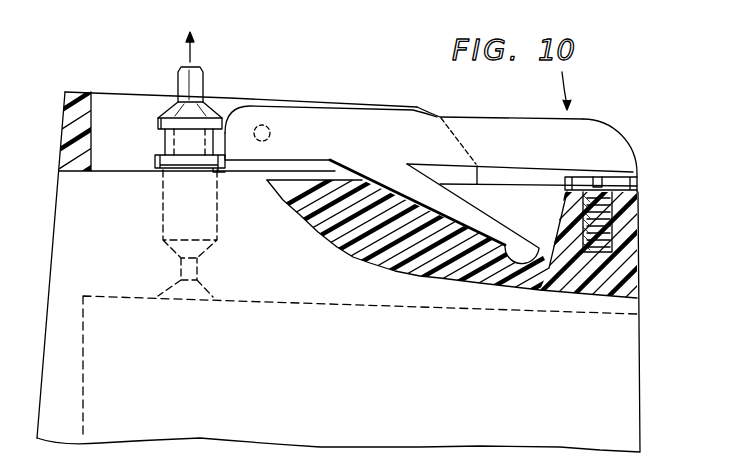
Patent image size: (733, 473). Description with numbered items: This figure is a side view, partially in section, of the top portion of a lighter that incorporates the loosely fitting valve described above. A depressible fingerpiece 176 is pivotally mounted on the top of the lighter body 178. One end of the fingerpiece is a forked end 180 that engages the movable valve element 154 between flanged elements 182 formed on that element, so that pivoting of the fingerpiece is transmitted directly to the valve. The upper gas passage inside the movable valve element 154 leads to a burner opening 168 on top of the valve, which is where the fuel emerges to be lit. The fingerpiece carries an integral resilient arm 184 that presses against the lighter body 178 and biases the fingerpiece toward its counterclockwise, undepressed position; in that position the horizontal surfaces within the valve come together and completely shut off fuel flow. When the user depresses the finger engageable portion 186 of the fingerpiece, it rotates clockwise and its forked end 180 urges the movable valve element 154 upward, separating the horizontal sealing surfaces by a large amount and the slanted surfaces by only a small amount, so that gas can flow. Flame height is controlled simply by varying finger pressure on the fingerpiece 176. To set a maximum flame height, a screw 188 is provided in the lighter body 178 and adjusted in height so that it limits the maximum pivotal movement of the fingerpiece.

The movable valve element 154 is at (187, 82).
The burner opening 168 is at (191, 62).
The depressible fingerpiece 176 is at (482, 115).
The lighter body 178 is at (640, 370).
The forked end 180 is at (164, 141).
The flanged elements 182 is at (221, 115).
The resilient arm 184 is at (482, 224).
The finger engageable portion 186 is at (617, 130).
The screw 188 is at (638, 186).